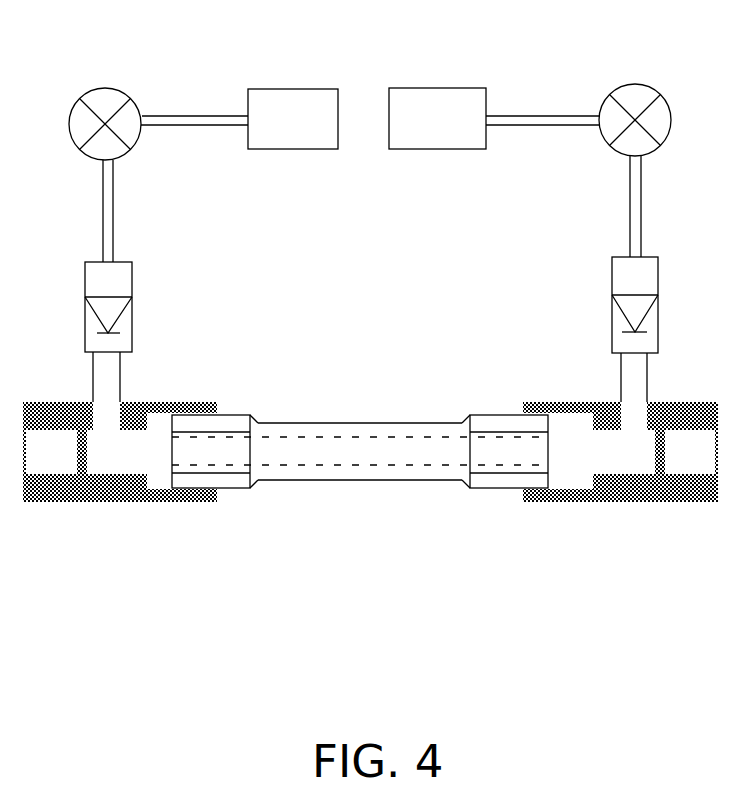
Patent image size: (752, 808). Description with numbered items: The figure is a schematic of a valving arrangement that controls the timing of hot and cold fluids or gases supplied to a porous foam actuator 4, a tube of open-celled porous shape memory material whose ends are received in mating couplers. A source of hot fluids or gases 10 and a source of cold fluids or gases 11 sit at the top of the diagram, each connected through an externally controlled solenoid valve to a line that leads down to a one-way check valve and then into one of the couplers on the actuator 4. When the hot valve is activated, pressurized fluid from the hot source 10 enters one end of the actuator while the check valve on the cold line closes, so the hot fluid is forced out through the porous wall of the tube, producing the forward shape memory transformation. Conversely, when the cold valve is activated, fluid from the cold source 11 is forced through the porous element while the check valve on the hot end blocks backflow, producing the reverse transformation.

The net-shape porous foam actuator 4 is at (360, 495).
The source of hot fluids or gases 10 is at (290, 76).
The source of cold fluids or gases 11 is at (437, 76).